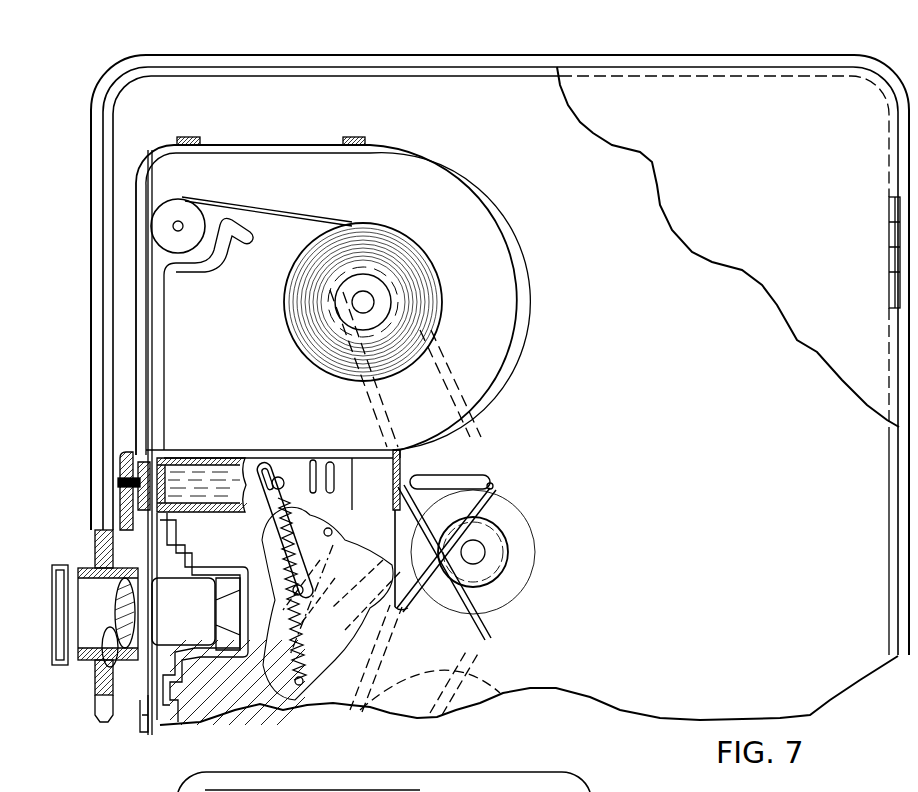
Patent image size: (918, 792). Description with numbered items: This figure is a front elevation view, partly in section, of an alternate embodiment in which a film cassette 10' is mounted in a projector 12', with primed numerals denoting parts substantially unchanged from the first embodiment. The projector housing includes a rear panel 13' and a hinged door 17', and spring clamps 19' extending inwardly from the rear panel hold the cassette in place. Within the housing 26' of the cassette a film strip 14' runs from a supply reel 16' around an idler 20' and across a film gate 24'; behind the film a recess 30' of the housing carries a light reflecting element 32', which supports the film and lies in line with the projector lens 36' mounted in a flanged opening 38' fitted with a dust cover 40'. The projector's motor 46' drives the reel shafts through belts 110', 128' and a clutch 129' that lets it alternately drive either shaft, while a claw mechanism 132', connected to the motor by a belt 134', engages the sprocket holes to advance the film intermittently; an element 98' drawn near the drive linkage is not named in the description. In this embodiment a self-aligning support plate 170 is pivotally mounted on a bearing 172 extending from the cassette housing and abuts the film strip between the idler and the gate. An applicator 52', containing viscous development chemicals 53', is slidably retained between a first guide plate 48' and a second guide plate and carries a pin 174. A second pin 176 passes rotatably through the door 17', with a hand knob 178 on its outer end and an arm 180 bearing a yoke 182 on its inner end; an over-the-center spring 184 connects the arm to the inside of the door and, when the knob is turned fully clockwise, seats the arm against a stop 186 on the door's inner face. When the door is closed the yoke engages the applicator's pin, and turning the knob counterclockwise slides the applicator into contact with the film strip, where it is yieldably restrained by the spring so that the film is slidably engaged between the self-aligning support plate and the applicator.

The projector 12' is at (500, 331).
The door 17' is at (728, 248).
The rear panel 13' is at (529, 679).
The cassette 10' is at (336, 327).
The spring clamps 19' is at (292, 116).
The idler 20' is at (194, 208).
The film strip 14' is at (267, 200).
The supply reel 16' is at (381, 335).
The housing 26' is at (99, 442).
The bearing 172 is at (132, 452).
The self-aligning support plate 170 is at (150, 455).
The guide plate 48' is at (202, 454).
The viscous development chemicals 53' is at (204, 460).
The pin 174 is at (277, 470).
The yoke 182 is at (285, 462).
The applicator 52' is at (333, 452).
The belt 110' is at (466, 468).
The pressure bar 98' is at (462, 460).
The motor 46' is at (387, 552).
The clutch 129' is at (503, 532).
The belt 128' is at (447, 599).
The dust cover 40' is at (63, 582).
The flanged opening 38' is at (90, 547).
The film gate 24' is at (108, 609).
The lens 36' is at (82, 691).
The light reflecting element 32' is at (196, 614).
The recess 30' is at (202, 617).
The claw mechanism 132' is at (124, 735).
The arm 180 is at (272, 540).
The belt 134' is at (320, 591).
The stop 186 is at (335, 538).
The pin 176 is at (305, 588).
The hand knob 178 is at (340, 600).
The over-the-center spring 184 is at (265, 700).